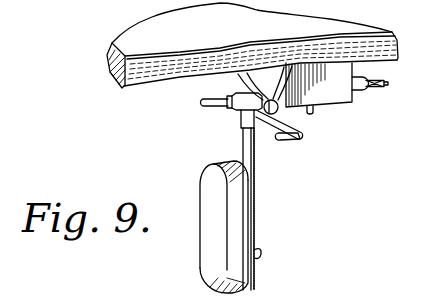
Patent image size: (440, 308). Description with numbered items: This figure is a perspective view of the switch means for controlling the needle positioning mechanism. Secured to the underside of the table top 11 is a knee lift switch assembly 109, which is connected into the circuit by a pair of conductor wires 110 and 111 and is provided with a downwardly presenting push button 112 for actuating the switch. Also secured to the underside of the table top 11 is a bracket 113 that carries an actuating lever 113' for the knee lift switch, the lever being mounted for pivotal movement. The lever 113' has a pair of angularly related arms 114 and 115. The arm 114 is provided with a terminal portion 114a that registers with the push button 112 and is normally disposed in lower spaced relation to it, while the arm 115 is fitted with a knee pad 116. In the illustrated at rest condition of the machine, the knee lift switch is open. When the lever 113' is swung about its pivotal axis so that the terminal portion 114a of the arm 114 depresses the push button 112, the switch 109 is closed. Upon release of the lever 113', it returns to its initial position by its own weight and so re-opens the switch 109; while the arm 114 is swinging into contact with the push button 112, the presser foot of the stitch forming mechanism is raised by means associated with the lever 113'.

The table top 11 is at (338, 26).
The knee lift switch assembly 109 is at (342, 96).
The conductor wire 110 is at (386, 74).
The conductor wire 111 is at (392, 82).
The push button 112 is at (313, 110).
The bracket 113 is at (226, 90).
The actuating lever 113' is at (224, 117).
The arm 114 is at (302, 138).
The terminal portion 114a is at (280, 143).
The arm 115 is at (253, 206).
The knee pad 116 is at (205, 198).